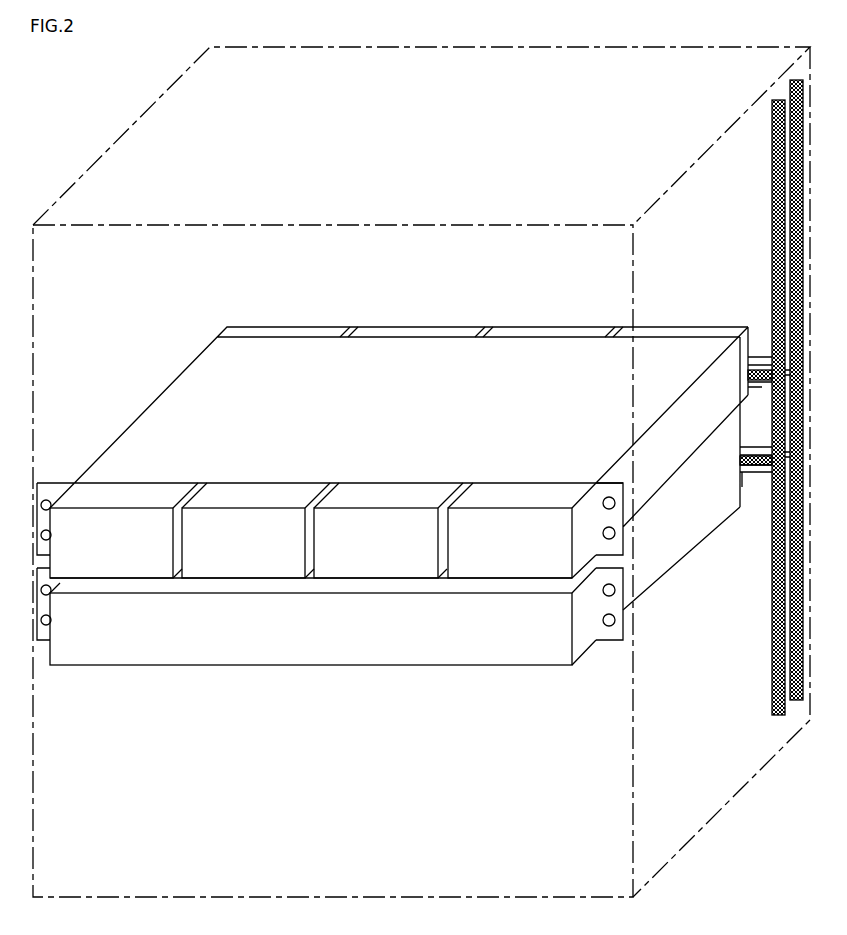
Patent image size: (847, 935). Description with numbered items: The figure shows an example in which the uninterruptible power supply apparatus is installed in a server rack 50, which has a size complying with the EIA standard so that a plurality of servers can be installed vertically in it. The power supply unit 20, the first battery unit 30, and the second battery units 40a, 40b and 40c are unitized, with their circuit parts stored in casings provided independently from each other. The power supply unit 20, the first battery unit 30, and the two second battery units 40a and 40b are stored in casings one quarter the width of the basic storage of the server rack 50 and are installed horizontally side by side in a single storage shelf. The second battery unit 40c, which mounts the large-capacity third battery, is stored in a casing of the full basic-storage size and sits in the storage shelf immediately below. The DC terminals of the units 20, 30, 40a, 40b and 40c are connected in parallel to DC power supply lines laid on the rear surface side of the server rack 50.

The server rack 50 is at (160, 140).
The power supply unit 20 is at (130, 508).
The first battery unit 30 is at (281, 508).
The second battery unit 40a is at (428, 522).
The second battery unit 40b is at (550, 505).
The second battery unit 40c is at (460, 655).